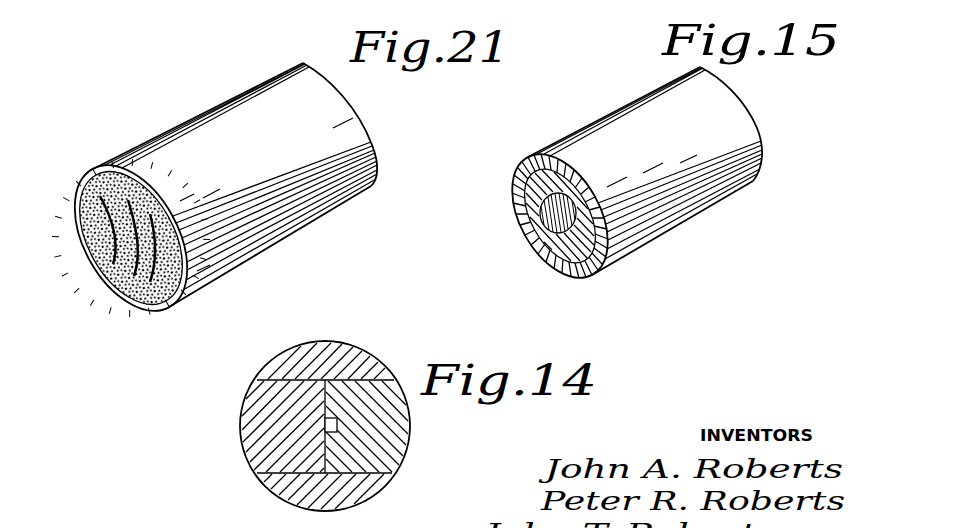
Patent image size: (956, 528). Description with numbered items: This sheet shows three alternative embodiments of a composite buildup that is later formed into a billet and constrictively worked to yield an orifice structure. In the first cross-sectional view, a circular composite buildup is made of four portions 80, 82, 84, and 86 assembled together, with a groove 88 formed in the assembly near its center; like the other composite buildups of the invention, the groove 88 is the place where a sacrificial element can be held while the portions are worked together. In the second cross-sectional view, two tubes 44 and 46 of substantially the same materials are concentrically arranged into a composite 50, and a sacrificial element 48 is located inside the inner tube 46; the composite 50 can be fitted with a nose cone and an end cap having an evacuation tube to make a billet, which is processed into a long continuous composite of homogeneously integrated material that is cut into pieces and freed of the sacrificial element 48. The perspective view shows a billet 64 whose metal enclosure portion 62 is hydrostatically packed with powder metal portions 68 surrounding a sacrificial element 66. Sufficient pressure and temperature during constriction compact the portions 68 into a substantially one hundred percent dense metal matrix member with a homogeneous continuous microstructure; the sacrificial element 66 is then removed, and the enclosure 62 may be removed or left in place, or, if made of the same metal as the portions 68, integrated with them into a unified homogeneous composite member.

In FIG. 15, the tube 44 is at (527, 170).
In FIG. 15, the tube 46 is at (531, 236).
In FIG. 15, the sacrificial element 48 is at (562, 264).
In FIG. 15, the composite 50 is at (594, 135).
In FIG. 21, the metal enclosure portion 62 is at (82, 181).
In FIG. 21, the billet 64 is at (253, 108).
In FIG. 21, the sacrificial element 66 is at (106, 268).
In FIG. 21, the powder metal portions 68 is at (87, 215).
In FIG. 14, the portion 80 is at (358, 497).
In FIG. 14, the portion 82 is at (383, 447).
In FIG. 14, the portion 84 is at (343, 353).
In FIG. 14, the portion 86 is at (262, 445).
In FIG. 14, the groove 88 is at (325, 423).